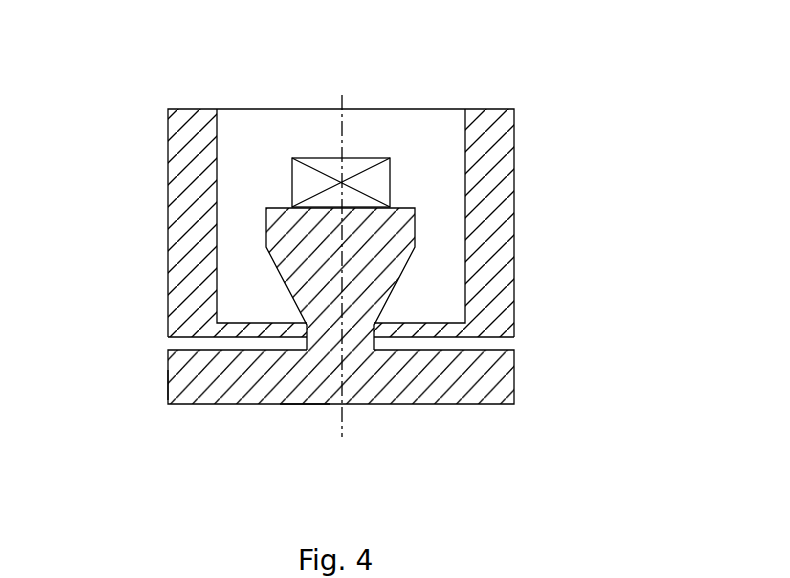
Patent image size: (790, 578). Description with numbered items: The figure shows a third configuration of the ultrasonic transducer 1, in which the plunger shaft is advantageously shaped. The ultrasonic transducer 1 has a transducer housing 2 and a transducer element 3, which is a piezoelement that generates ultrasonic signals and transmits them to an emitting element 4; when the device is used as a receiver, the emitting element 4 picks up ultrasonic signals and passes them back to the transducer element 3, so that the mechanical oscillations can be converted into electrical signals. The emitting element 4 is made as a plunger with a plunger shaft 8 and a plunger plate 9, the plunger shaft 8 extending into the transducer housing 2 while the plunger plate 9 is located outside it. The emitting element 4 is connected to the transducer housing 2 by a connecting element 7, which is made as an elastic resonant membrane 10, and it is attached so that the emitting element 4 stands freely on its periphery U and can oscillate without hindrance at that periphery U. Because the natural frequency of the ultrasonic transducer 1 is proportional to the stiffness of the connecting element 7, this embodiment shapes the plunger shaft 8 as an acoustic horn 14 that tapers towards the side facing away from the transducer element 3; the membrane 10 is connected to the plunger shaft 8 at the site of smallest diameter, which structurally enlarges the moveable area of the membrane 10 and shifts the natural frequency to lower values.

The ultrasonic transducer 1 is at (364, 266).
The transducer housing 2 is at (502, 143).
The transducer element 3 is at (380, 185).
The emitting element 4 is at (300, 410).
The connecting element 7 is at (416, 312).
The membrane 10 is at (435, 330).
The plunger shaft 8 is at (459, 279).
The acoustic horn 14 is at (380, 272).
The plunger plate 9 is at (473, 380).
The periphery U is at (168, 383).